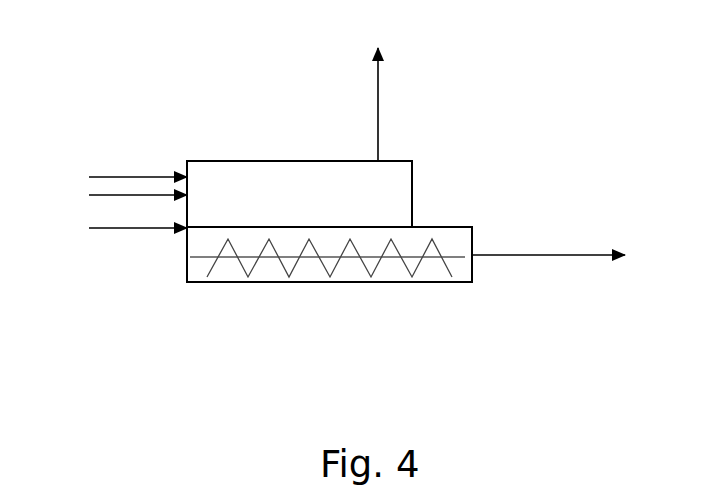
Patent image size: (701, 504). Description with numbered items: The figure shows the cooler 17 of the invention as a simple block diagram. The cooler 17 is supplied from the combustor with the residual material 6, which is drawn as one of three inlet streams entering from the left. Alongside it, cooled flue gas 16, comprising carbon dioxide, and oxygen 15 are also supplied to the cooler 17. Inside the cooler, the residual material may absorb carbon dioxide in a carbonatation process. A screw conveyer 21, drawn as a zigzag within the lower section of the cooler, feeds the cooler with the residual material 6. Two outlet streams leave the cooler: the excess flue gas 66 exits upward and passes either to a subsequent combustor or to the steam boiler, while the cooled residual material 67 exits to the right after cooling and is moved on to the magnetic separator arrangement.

The oxygen 15 is at (127, 180).
The cooled flue gas 16 is at (110, 197).
The residual material 6 is at (125, 229).
The cooler 17 is at (298, 185).
The screw conveyer 21 is at (329, 298).
The excess flue gas 66 is at (380, 84).
The cooled residual material 67 is at (577, 254).